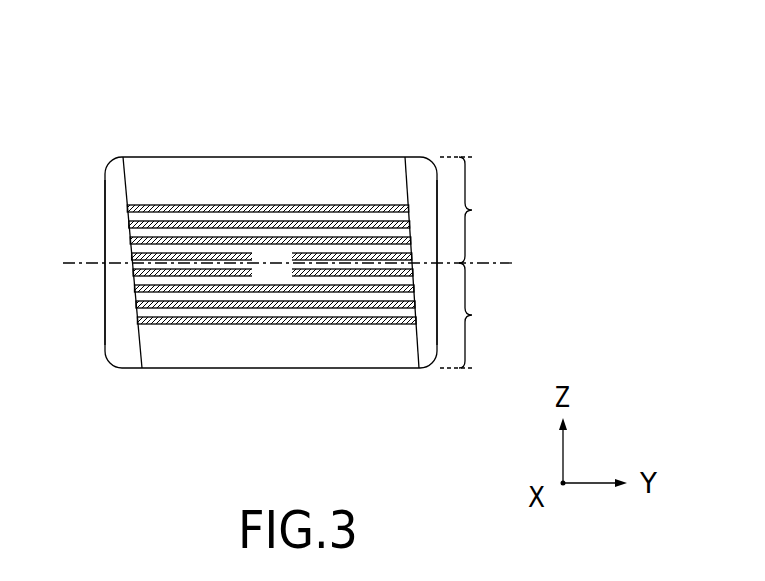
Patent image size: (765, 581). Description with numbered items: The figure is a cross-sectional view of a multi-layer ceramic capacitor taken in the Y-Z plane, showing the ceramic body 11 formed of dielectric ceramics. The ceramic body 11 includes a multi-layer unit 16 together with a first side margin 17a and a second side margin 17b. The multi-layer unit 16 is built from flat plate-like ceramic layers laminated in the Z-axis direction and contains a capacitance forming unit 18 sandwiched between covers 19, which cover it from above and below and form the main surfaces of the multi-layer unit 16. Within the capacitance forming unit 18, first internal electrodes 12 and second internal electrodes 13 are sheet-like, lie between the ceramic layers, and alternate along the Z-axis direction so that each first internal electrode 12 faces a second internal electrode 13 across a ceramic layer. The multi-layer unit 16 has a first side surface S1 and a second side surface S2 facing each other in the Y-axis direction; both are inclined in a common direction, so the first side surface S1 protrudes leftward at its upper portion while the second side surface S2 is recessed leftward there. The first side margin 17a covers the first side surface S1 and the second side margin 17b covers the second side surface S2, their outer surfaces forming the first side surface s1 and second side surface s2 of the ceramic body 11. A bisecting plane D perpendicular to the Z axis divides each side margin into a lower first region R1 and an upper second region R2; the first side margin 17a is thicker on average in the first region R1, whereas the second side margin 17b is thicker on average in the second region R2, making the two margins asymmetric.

The ceramic body 11 is at (421, 66).
The first internal electrode 12 is at (173, 305).
The second internal electrode 13 is at (307, 320).
The multi-layer unit 16 is at (284, 146).
The first side margin 17a is at (112, 158).
The second side margin 17b is at (412, 165).
The capacitance forming unit 18 is at (290, 278).
The cover 19 is at (288, 197).
The first side surface of the ceramic body s1 is at (105, 226).
The second side surface of the ceramic body s2 is at (439, 186).
The first side surface of the multi-layer unit S1 is at (140, 337).
The second side surface of the multi-layer unit S2 is at (418, 338).
The first region R1 is at (475, 315).
The second region R2 is at (475, 210).
The bisecting plane D is at (300, 263).